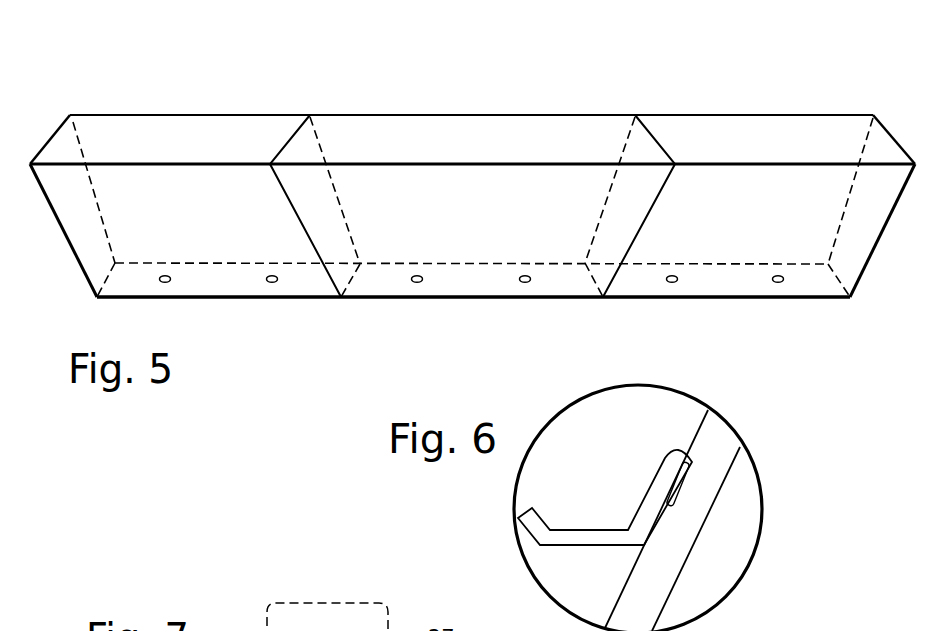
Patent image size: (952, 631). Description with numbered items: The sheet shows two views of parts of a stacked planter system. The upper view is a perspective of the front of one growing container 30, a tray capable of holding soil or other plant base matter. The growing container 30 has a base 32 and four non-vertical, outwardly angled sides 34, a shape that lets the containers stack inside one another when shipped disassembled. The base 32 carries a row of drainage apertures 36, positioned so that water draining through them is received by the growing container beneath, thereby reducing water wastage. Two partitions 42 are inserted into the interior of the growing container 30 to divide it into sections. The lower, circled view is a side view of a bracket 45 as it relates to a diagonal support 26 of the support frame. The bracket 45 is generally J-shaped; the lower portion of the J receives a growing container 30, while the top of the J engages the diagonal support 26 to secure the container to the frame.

In FIG. 5, the growing container 30 is at (822, 62).
In FIG. 5, the base 32 is at (718, 283).
In FIG. 5, the outwardly angled sides 34 is at (737, 126).
In FIG. 5, the drainage aperture 36 is at (417, 284).
In FIG. 5, the partition 42 is at (313, 140).
In FIG. 6, the bracket 45 is at (578, 532).
In FIG. 6, the diagonal support 26 is at (677, 536).